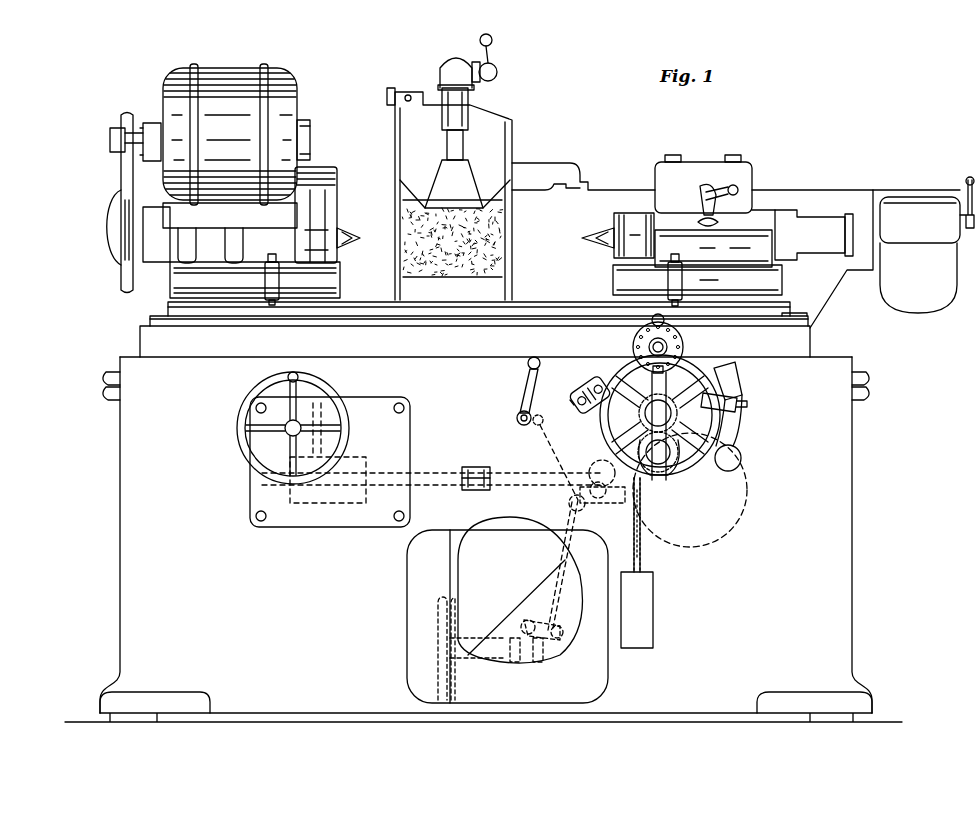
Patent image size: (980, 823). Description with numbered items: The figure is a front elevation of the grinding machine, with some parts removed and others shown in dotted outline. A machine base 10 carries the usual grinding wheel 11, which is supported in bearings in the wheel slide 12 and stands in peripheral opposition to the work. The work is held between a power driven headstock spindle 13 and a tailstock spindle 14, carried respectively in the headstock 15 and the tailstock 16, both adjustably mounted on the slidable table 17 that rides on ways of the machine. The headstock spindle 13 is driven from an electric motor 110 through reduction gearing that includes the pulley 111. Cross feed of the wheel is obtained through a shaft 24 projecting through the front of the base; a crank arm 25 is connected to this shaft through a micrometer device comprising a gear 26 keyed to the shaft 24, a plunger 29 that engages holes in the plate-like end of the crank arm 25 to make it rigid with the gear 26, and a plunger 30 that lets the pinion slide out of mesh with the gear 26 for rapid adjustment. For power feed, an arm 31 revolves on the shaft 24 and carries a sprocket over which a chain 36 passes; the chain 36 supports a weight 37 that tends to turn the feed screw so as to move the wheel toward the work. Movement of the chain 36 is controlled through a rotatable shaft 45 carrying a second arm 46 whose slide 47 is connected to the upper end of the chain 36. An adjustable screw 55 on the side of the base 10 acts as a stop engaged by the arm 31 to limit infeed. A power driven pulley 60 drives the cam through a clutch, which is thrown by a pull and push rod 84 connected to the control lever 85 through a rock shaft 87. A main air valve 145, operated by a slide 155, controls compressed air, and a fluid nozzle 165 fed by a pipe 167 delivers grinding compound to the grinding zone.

The machine base 10 is at (125, 536).
The grinding wheel 11 is at (396, 204).
The wheel slide 12 is at (598, 202).
The headstock spindle 13 is at (350, 240).
The tailstock spindle 14 is at (592, 240).
The headstock 15 is at (328, 170).
The tailstock 16 is at (778, 262).
The slidable table 17 is at (150, 342).
The shaft 24 is at (650, 414).
The crank arm 25 is at (664, 457).
The gear 26 is at (612, 436).
The plunger 29 is at (679, 333).
The plunger 30 is at (649, 345).
The arm 31 is at (603, 386).
The chain 36 is at (641, 548).
The weight 37 is at (653, 602).
The rotatable shaft 45 is at (732, 460).
The second arm 46 is at (730, 384).
The slide 47 is at (740, 400).
The adjustable screw 55 is at (574, 404).
The power driven pulley 60 is at (441, 606).
The pull and push rod 84 is at (565, 584).
The control lever 85 is at (528, 368).
The rock shaft 87 is at (516, 416).
The electric motor 110 is at (218, 80).
The pulley 111 is at (118, 184).
The main air valve 145 is at (305, 500).
The slide 155 is at (487, 467).
The fluid nozzle 165 is at (450, 196).
The pipe 167 is at (452, 102).